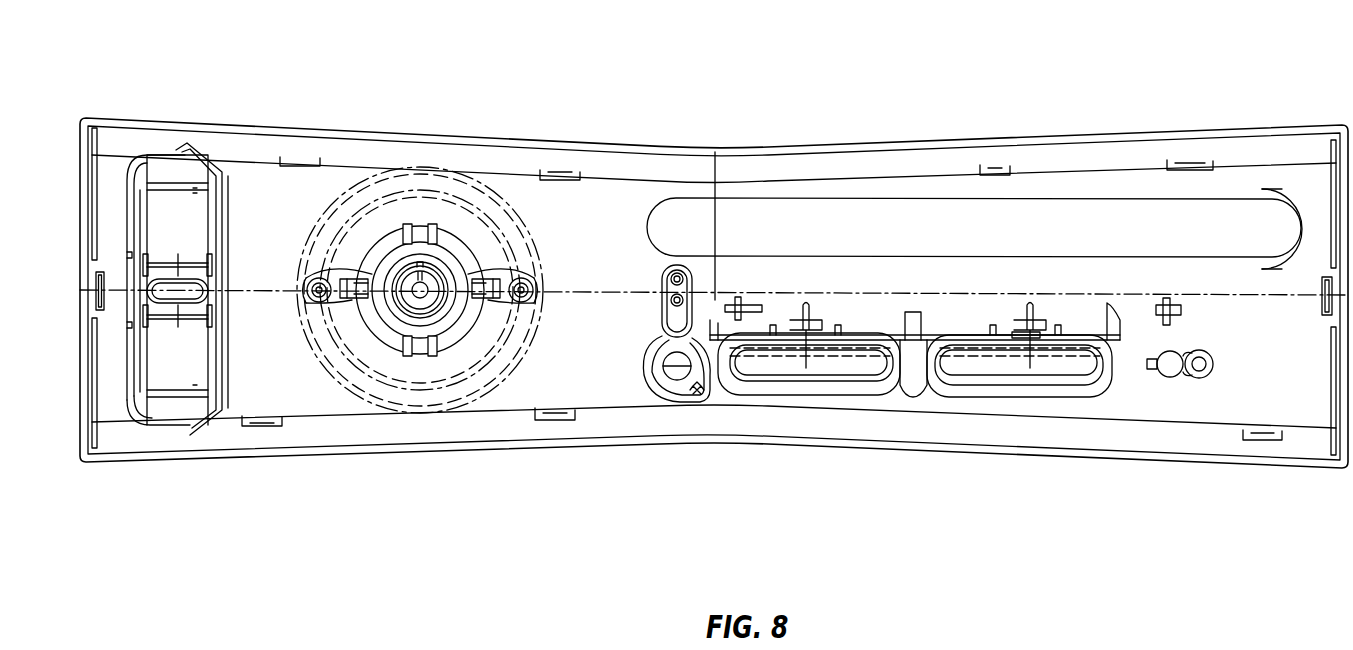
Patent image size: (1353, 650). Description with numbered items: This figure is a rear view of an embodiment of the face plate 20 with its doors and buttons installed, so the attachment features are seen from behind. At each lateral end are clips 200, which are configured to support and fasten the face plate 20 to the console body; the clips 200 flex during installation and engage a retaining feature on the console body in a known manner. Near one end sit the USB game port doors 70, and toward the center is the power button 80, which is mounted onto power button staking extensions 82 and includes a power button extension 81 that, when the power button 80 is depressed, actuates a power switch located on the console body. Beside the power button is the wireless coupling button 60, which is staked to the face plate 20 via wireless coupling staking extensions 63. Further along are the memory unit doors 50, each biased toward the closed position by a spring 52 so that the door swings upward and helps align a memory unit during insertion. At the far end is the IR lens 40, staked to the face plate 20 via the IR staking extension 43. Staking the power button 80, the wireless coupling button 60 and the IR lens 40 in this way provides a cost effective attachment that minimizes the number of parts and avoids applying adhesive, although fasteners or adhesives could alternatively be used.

The face plate 20 is at (265, 122).
The IR lens 40 is at (1170, 372).
The IR staking extension 43 is at (1198, 350).
The memory unit door 50 is at (827, 370).
The spring 52 is at (1020, 332).
The wireless coupling button 60 is at (660, 378).
The wireless coupling staking extensions 63 is at (680, 276).
The USB game port doors 70 is at (177, 210).
The power button 80 is at (407, 360).
The power button extension 81 is at (422, 298).
The power button staking extensions 82 is at (337, 293).
The clips 200 is at (101, 312).